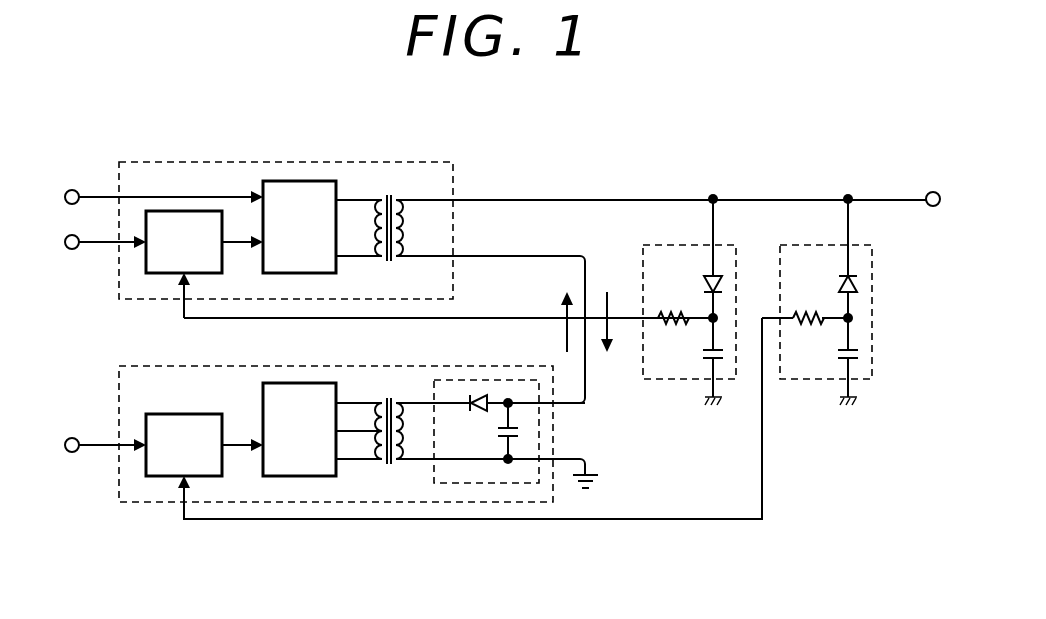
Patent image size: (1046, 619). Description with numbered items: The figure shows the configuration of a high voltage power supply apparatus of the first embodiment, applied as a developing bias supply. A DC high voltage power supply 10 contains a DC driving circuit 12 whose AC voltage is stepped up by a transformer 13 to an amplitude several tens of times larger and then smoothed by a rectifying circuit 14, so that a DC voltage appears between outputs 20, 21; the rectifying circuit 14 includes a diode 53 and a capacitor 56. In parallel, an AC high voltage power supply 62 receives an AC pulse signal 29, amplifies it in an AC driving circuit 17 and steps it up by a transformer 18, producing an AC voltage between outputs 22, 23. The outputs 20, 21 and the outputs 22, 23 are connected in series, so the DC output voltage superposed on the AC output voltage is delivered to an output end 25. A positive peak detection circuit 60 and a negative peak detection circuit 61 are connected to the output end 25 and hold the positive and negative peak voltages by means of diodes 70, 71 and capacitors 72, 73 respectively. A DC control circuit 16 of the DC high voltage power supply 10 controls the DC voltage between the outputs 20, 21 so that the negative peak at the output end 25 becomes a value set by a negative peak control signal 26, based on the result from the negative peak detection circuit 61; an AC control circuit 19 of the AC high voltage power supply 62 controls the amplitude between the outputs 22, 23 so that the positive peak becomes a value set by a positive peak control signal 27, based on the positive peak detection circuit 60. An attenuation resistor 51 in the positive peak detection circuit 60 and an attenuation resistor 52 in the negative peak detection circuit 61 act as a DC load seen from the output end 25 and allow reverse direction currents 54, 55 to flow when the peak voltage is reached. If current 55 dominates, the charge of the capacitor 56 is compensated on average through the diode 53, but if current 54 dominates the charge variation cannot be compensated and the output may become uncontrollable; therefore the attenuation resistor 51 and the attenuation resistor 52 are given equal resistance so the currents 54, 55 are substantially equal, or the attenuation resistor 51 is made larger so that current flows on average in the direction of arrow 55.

The DC high voltage power supply 10 is at (142, 503).
The DC driving circuit 12 is at (338, 468).
The transformer 13 is at (390, 463).
The rectifying circuit 14 is at (463, 470).
The DC control circuit 16 is at (197, 414).
The AC driving circuit 17 is at (337, 264).
The transformer 18 is at (392, 263).
The AC control circuit 19 is at (179, 211).
The output 20 is at (568, 402).
The output 21 is at (568, 457).
The output 22 is at (483, 200).
The output 23 is at (483, 257).
The output end 25 is at (933, 207).
The negative peak control signal 26 is at (72, 437).
The positive peak control signal 27 is at (72, 250).
The AC pulse signal 29 is at (72, 189).
The attenuation resistor 51 is at (668, 310).
The attenuation resistor 52 is at (807, 310).
The diode 53 is at (468, 401).
The reverse direction current (arrow) 54 is at (564, 308).
The reverse direction current (arrow) 55 is at (606, 308).
The capacitor 56 is at (497, 431).
The positive peak detection circuit 60 is at (700, 317).
The negative peak detection circuit 61 is at (827, 317).
The AC high voltage power supply 62 is at (403, 162).
The diode 70 is at (710, 268).
The diode 71 is at (843, 267).
The capacitor 72 is at (722, 356).
The capacitor 73 is at (857, 356).